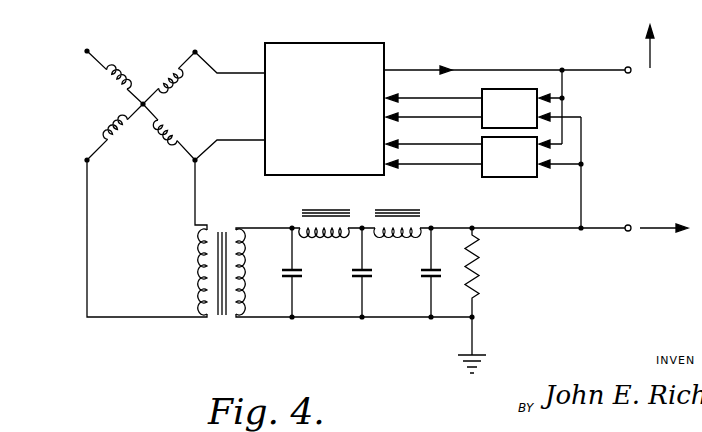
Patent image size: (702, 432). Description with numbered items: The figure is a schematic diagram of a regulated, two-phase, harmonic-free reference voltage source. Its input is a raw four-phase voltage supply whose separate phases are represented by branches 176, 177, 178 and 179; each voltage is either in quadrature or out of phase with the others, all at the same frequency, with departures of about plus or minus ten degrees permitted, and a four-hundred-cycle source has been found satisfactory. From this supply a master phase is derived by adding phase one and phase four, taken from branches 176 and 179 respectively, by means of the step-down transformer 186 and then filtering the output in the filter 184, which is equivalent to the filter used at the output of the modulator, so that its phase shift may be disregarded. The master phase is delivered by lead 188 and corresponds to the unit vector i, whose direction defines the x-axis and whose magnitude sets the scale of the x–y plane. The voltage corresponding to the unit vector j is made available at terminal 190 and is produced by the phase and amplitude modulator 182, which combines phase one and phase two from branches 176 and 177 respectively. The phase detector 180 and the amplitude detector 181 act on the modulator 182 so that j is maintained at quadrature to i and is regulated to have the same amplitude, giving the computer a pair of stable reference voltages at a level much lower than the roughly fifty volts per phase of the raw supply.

The branch 176 is at (163, 137).
The branch 177 is at (180, 82).
The branch 178 is at (110, 68).
The branch 179 is at (112, 124).
The phase detector 180 is at (492, 89).
The amplitude detector 181 is at (492, 177).
The phase and amplitude modulator 182 is at (386, 53).
The filter 184 is at (369, 286).
The transformer 186 is at (221, 318).
The lead 188 is at (600, 227).
The lead 190 is at (600, 69).